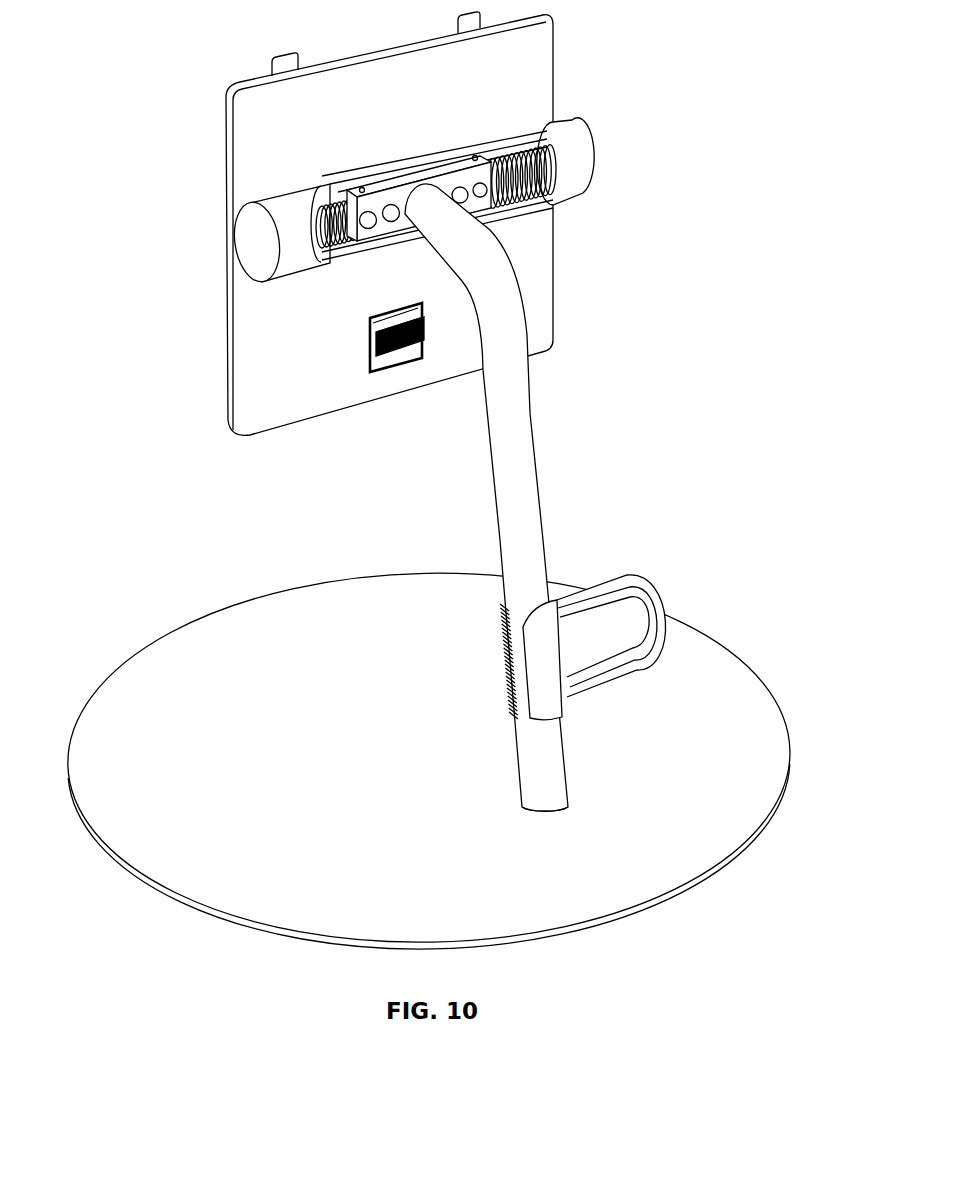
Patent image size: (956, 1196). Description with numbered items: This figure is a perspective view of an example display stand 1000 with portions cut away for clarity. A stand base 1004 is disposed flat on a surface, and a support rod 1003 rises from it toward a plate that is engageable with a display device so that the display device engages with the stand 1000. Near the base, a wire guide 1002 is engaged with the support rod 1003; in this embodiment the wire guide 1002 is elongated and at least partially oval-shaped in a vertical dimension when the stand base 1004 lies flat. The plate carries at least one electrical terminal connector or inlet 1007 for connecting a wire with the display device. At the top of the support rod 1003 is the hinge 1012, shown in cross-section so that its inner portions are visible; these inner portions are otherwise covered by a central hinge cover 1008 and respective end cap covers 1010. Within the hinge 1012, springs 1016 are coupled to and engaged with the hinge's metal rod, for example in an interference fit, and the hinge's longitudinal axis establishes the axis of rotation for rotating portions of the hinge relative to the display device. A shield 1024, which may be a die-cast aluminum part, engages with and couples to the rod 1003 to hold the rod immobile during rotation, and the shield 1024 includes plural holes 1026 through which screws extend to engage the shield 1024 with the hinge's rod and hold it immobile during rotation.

The stand 1000 is at (704, 194).
The wire guide 1002 is at (644, 585).
The support rod 1003 is at (530, 482).
The stand base 1004 is at (748, 661).
The electrical terminal connector or inlet 1007 is at (370, 327).
The central hinge cover 1008 is at (557, 43).
The end cap covers 1010 is at (578, 138).
The hinge 1012 is at (465, 137).
The springs 1016 is at (328, 198).
The shield 1024 is at (371, 184).
The holes 1026 is at (391, 222).